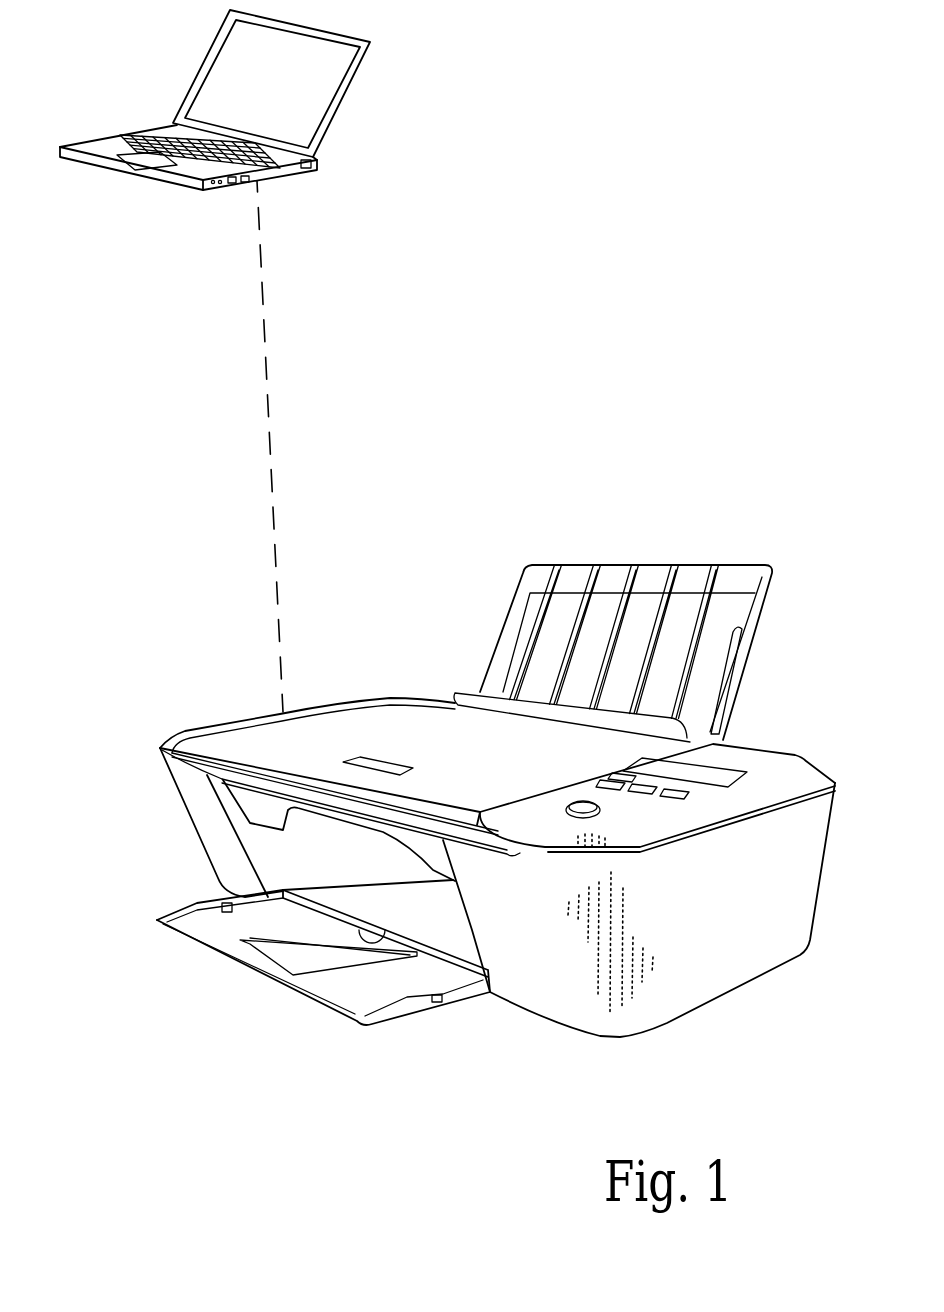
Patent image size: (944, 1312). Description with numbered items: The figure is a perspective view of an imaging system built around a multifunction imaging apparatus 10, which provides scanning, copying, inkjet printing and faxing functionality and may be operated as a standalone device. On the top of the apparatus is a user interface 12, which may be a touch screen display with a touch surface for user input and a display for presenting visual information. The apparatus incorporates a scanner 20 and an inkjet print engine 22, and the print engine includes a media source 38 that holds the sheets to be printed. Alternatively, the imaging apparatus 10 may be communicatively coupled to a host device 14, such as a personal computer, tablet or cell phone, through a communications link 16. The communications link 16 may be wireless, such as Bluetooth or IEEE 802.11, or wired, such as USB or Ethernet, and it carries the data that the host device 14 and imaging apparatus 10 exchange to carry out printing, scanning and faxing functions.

The multifunction imaging apparatus 10 is at (496, 728).
The user interface 12 is at (727, 747).
The host device 14 is at (410, 140).
The communications link 16 is at (265, 335).
The scanner 20 is at (406, 743).
The inkjet print engine 22 is at (458, 933).
The media source 38 is at (760, 622).